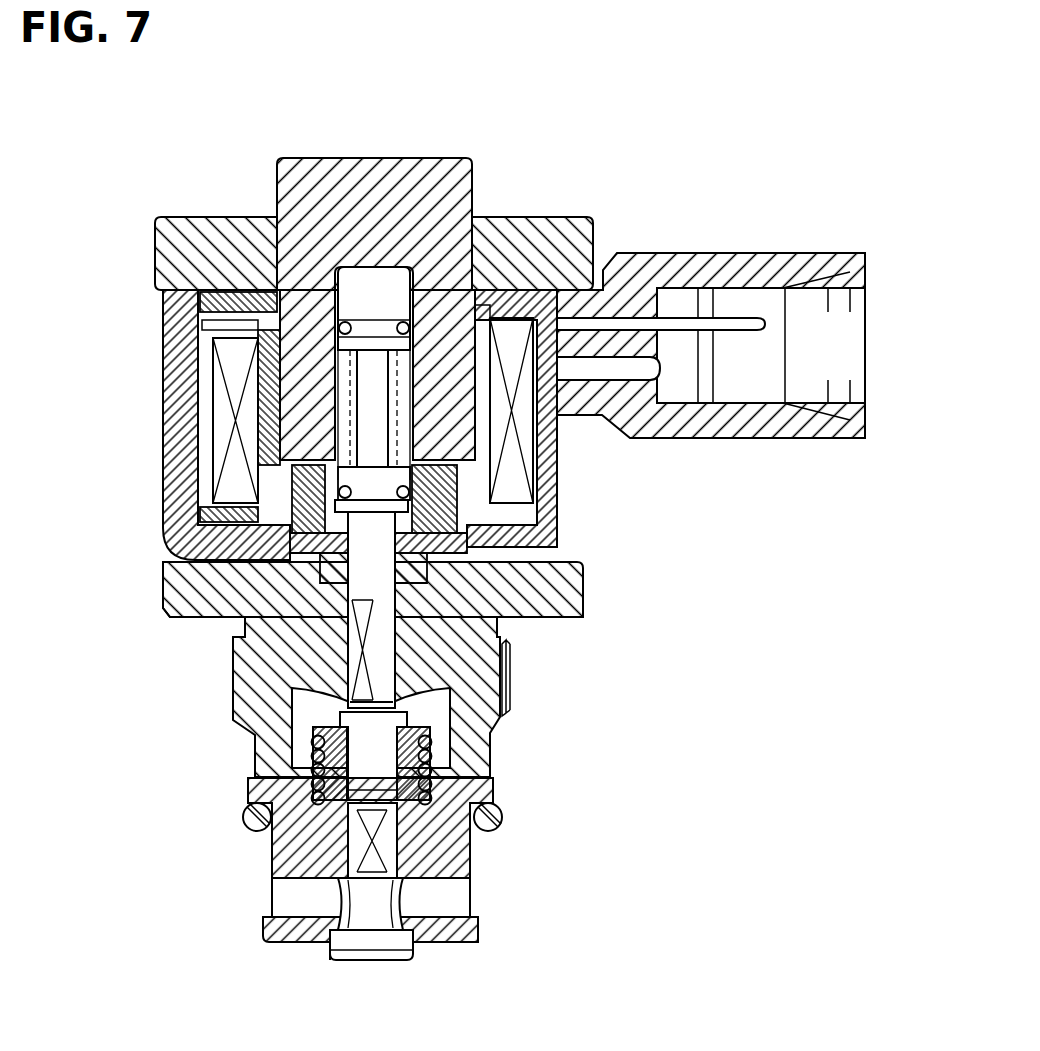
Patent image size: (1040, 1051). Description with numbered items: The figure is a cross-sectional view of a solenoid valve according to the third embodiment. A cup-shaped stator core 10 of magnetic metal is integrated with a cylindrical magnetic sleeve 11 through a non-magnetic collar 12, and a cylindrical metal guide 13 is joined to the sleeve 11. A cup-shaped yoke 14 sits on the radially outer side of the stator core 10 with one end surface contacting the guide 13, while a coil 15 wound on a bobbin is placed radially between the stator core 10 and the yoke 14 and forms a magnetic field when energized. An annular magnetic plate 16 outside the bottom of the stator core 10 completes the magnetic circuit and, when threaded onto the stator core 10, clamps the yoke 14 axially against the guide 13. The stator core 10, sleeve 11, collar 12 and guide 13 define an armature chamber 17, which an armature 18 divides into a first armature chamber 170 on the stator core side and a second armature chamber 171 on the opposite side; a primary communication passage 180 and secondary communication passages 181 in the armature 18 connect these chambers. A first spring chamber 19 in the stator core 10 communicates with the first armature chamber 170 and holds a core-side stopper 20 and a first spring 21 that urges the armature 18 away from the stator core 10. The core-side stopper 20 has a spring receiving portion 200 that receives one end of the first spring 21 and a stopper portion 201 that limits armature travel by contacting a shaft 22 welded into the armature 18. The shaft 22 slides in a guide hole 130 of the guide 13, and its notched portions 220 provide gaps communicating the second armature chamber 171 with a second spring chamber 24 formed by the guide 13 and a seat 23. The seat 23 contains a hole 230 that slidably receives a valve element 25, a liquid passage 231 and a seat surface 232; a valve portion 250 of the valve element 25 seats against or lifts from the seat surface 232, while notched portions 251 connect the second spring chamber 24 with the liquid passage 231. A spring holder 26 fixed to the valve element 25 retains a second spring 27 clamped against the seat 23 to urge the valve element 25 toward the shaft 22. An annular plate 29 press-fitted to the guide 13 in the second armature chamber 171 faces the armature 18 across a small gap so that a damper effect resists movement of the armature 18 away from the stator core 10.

The stator core 10 is at (308, 177).
The first spring 21 is at (400, 300).
The plate 16 is at (540, 230).
The yoke 14 is at (182, 415).
The coil 15 is at (222, 447).
The collar 12 is at (275, 476).
The sleeve 11 is at (262, 536).
The armature 18 is at (300, 566).
The secondary communication passages 181 is at (440, 600).
The plate 29 is at (250, 632).
The guide 13 is at (497, 740).
The guide hole 130 is at (505, 690).
The primary communication passage 180 is at (380, 678).
The notched portions 220 is at (350, 660).
The shaft 22 is at (345, 715).
The second spring chamber 24 is at (310, 742).
The spring holder 26 is at (432, 775).
The seat 23 is at (273, 858).
The hole 230 is at (252, 818).
The liquid passage 231 is at (283, 903).
The seat surface 232 is at (327, 935).
The second spring 27 is at (377, 865).
The valve element 25 is at (395, 920).
The notched portions 251 is at (377, 902).
The valve portion 250 is at (400, 948).
The core-side stopper 20 is at (213, 378).
The spring receiving portion 200 is at (350, 283).
The stopper portion 201 is at (370, 385).
The armature chamber 17 is at (680, 418).
The first armature chamber 170 is at (550, 503).
The second armature chamber 171 is at (557, 548).
The first spring chamber 19 is at (495, 422).